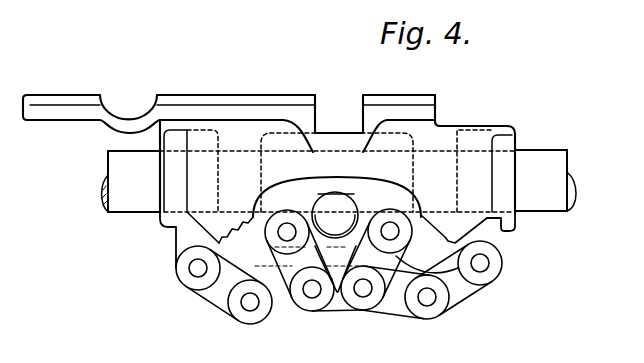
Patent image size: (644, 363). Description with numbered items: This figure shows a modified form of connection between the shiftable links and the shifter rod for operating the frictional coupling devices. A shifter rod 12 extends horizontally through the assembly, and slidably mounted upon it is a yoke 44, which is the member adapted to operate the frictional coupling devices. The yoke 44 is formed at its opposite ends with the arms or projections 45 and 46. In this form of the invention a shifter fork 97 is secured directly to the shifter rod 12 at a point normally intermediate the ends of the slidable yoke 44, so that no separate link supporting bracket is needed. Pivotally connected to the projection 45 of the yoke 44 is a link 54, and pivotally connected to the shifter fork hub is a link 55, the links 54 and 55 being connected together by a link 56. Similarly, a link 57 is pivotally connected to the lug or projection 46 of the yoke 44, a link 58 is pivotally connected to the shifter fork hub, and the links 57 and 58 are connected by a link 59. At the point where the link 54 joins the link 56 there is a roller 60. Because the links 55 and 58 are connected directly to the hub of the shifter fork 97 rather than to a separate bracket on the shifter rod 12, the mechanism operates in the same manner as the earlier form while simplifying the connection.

The shifter rod 12 is at (553, 177).
The yoke 44 is at (519, 133).
The arm or projection 45 is at (518, 223).
The arm or projection 46 is at (172, 250).
The link 54 is at (453, 293).
The link 55 is at (427, 262).
The link 56 is at (392, 307).
The link 57 is at (210, 303).
The link 58 is at (272, 267).
The link 59 is at (280, 307).
The roller 60 is at (330, 296).
The shifter fork 97 is at (337, 197).